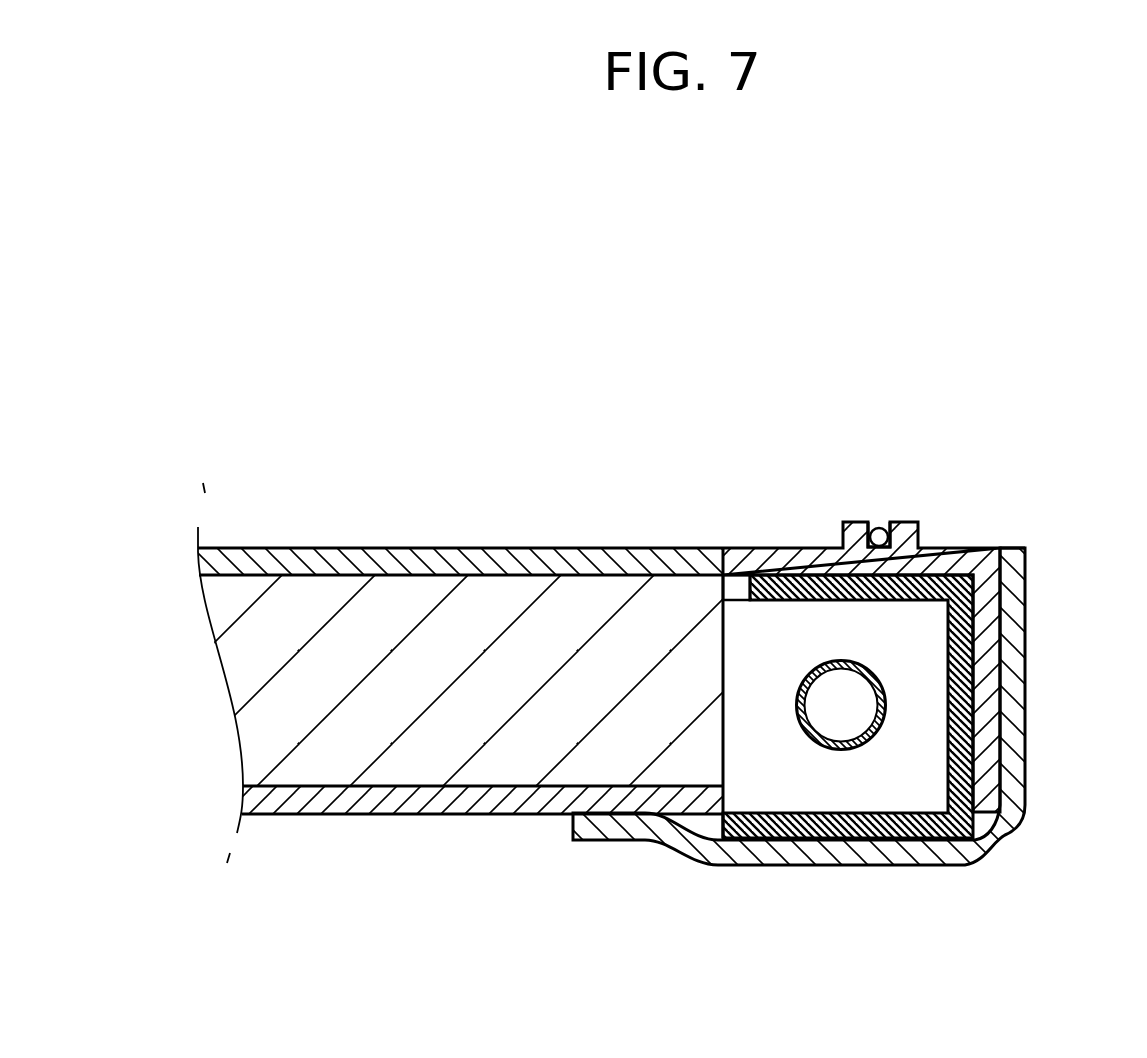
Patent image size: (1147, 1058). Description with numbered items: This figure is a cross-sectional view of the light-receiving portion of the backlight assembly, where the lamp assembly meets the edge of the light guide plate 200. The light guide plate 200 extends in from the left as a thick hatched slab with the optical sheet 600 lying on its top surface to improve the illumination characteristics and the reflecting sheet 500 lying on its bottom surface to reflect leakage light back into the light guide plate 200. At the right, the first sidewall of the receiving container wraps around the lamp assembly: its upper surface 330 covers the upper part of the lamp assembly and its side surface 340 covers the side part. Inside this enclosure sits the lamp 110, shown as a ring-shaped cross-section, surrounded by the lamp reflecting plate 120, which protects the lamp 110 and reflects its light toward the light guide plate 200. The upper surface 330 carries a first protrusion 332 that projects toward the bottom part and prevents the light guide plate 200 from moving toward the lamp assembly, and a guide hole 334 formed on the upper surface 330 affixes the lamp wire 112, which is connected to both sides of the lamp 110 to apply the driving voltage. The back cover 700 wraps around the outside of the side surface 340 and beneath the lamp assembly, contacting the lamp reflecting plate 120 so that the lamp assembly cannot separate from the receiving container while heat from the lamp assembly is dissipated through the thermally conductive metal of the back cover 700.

The lamp 110 is at (885, 700).
The lamp wire 112 is at (880, 527).
The lamp reflecting plate 120 is at (960, 758).
The light guide plate 200 is at (362, 750).
The upper surface 330 is at (883, 565).
The first protrusion 332 is at (737, 590).
The guide hole 334 is at (872, 522).
The side surface 340 is at (977, 662).
The reflecting sheet 500 is at (440, 797).
The optical sheet 600 is at (463, 560).
The back cover 700 is at (993, 838).